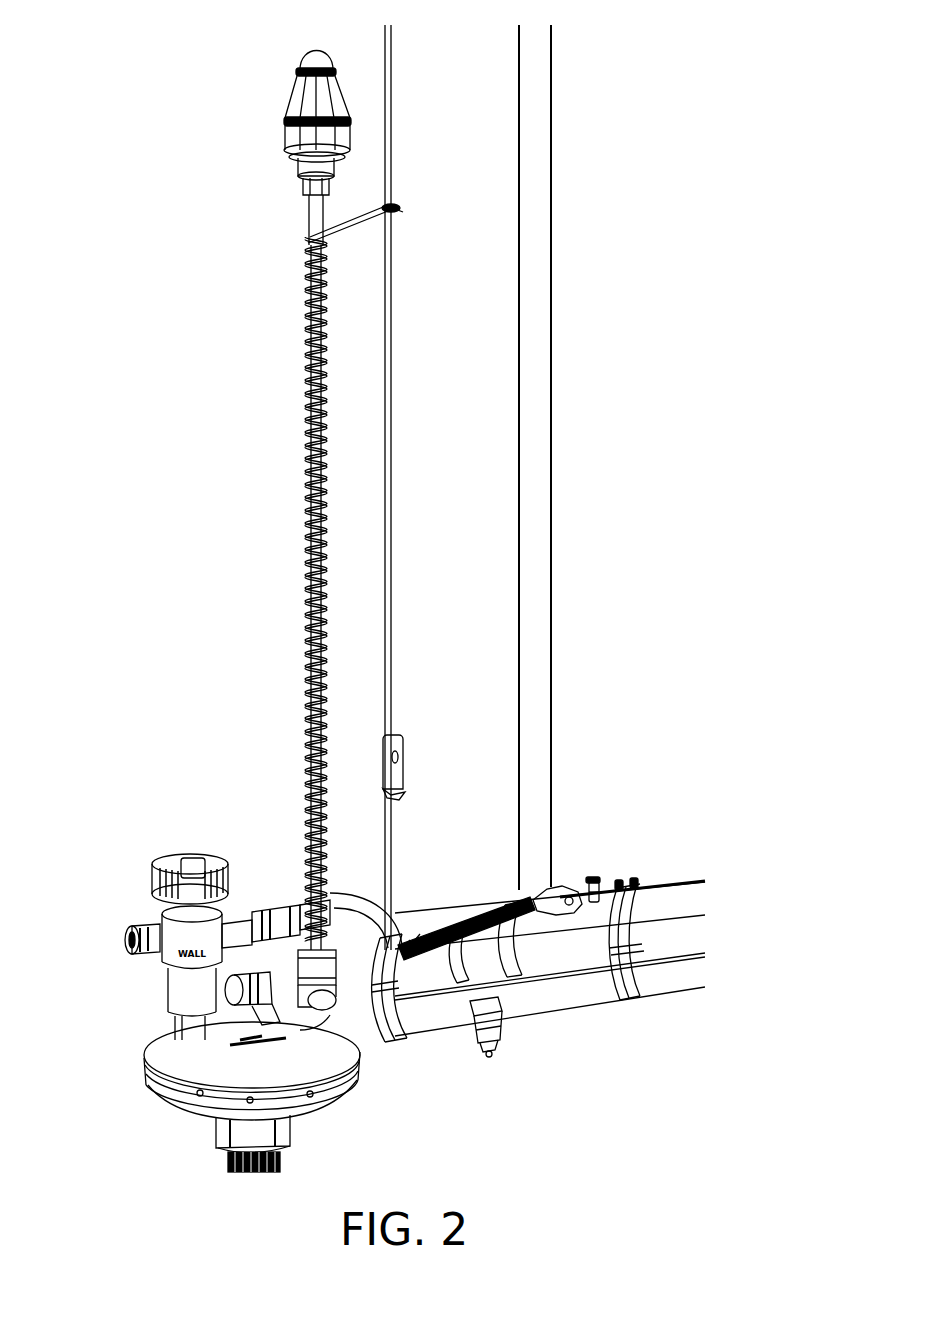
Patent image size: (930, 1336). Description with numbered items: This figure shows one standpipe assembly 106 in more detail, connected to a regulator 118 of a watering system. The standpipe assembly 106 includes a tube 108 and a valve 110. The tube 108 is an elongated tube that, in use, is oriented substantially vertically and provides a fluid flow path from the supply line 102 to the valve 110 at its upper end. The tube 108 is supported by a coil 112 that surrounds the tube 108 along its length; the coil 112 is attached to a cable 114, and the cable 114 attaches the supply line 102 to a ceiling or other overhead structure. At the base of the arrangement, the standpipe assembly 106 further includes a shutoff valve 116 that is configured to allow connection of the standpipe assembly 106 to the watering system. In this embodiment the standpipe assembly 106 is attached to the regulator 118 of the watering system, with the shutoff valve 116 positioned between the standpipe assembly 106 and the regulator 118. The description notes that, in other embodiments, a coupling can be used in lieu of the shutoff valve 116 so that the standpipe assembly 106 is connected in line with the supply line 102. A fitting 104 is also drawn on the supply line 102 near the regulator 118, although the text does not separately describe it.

The supply line 102 is at (590, 1008).
The valve fitting 104 is at (494, 1042).
The standpipe assembly 106 is at (130, 341).
The tube 108 is at (308, 222).
The valve 110 is at (297, 98).
The coil 112 is at (305, 290).
The cable 114 is at (392, 310).
The shutoff valve 116 is at (337, 958).
The regulator 118 is at (175, 1092).